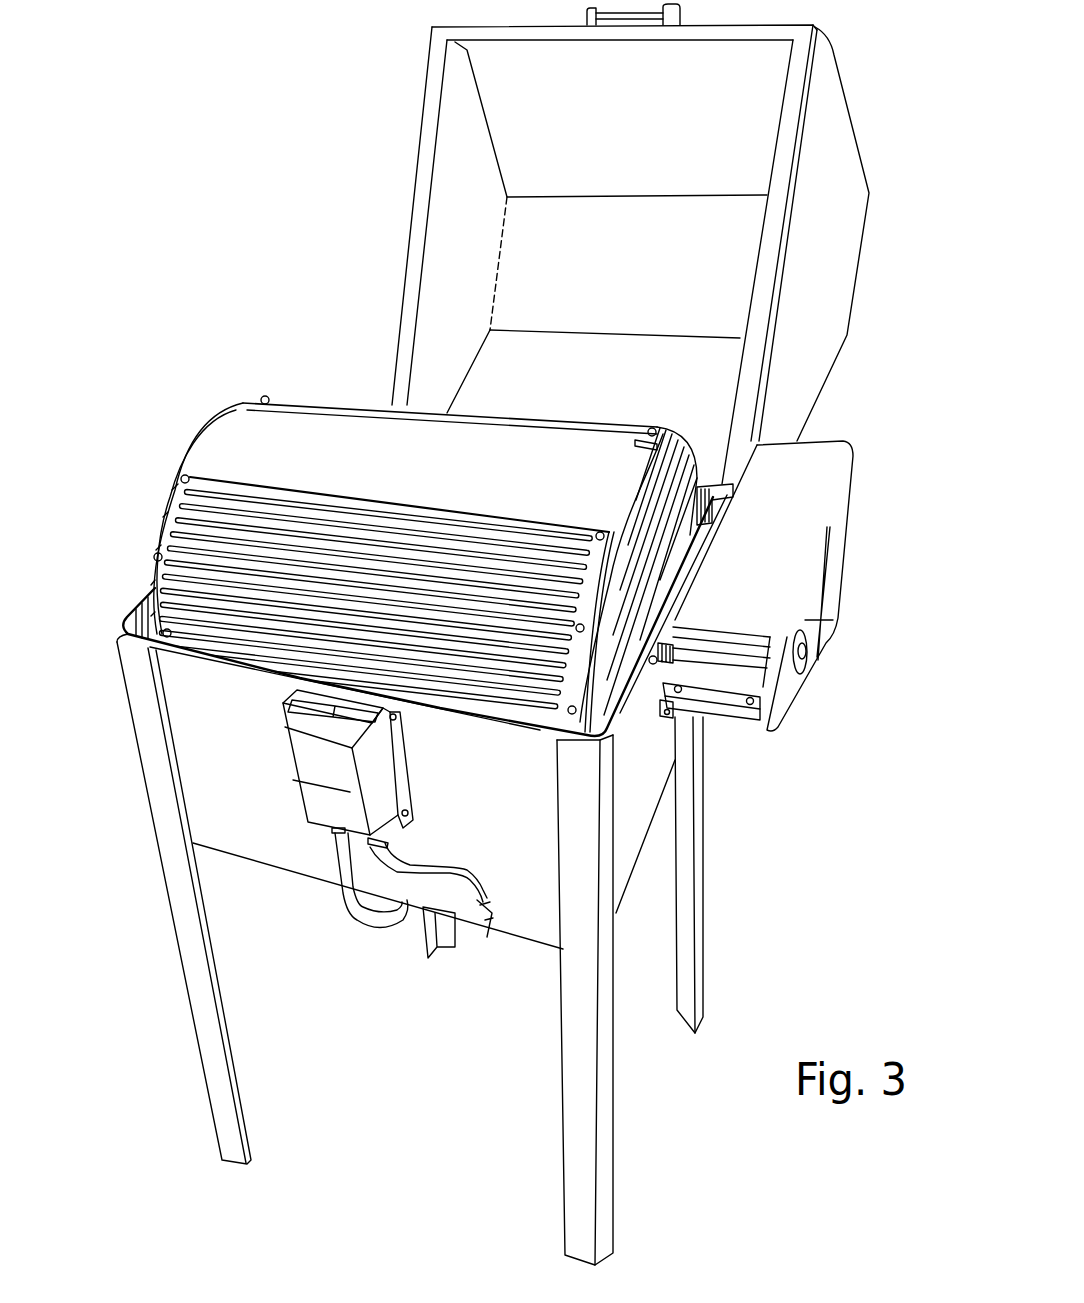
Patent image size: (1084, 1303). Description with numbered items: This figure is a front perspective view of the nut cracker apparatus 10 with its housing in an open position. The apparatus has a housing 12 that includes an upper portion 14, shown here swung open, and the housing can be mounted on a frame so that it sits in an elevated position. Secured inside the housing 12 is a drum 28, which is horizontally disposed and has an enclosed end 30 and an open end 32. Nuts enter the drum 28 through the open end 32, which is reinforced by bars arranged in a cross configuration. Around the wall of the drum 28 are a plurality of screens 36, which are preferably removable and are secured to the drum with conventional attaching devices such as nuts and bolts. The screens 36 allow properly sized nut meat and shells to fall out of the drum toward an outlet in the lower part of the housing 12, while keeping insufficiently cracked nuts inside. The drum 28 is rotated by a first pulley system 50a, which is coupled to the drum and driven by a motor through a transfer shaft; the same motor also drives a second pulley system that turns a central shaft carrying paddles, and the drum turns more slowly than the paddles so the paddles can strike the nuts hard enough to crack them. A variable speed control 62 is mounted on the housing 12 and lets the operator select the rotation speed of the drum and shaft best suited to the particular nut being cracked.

The nut cracker apparatus 10 is at (198, 142).
The housing 12 is at (653, 767).
The upper portion 14 is at (852, 229).
The drum 28 is at (650, 463).
The enclosed end 30 is at (640, 513).
The open end 32 is at (186, 447).
The screens 36 is at (307, 540).
The first pulley system 50a is at (768, 603).
The variable speed control 62 is at (387, 773).